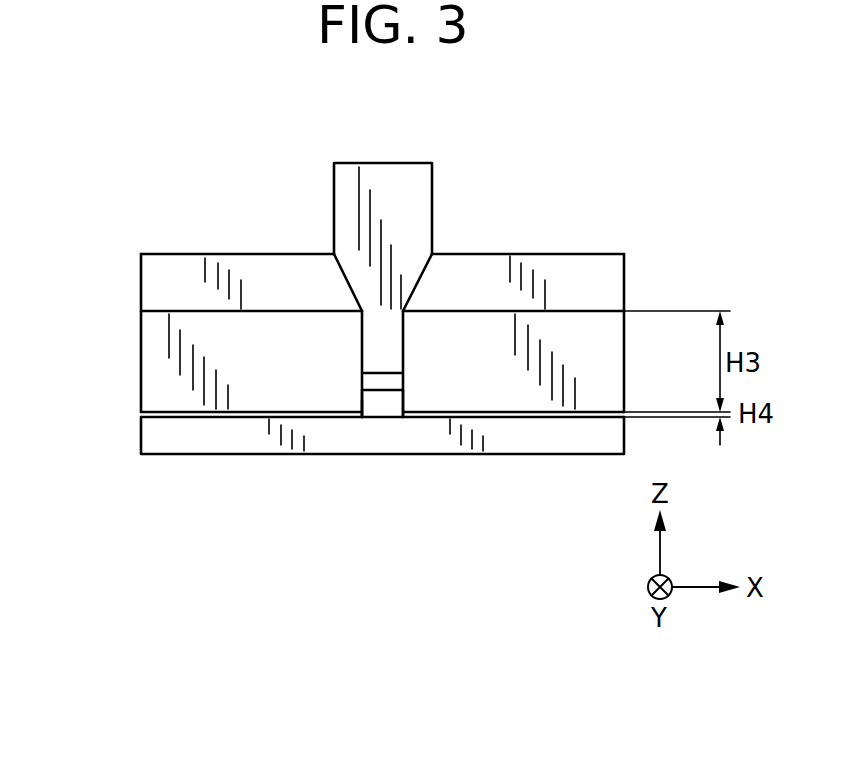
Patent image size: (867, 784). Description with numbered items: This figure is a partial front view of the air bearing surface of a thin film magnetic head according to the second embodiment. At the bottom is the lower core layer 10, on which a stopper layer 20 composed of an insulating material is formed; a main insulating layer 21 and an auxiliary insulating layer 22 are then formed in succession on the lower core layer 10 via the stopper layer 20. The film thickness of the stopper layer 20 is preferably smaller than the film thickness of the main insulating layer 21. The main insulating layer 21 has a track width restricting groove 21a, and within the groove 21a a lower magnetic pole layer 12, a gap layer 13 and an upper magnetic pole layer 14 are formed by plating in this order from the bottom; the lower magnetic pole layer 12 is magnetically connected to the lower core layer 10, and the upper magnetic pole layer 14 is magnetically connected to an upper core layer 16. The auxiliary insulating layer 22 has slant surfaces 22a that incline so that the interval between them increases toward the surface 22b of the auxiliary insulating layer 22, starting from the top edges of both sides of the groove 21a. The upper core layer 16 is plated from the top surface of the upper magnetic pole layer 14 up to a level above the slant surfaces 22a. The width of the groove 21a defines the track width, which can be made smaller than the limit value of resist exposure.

The lower core layer 10 is at (165, 437).
The lower magnetic pole layer 12 is at (392, 405).
The gap layer 13 is at (395, 378).
The upper magnetic pole layer 14 is at (361, 340).
The upper core layer 16 is at (396, 186).
The stopper layer 20 is at (240, 412).
The main insulating layer 21 is at (165, 372).
The track width restricting groove 21a is at (383, 405).
The auxiliary insulating layer 22 is at (165, 284).
The slant surfaces 22a is at (347, 268).
The surface 22b is at (185, 254).